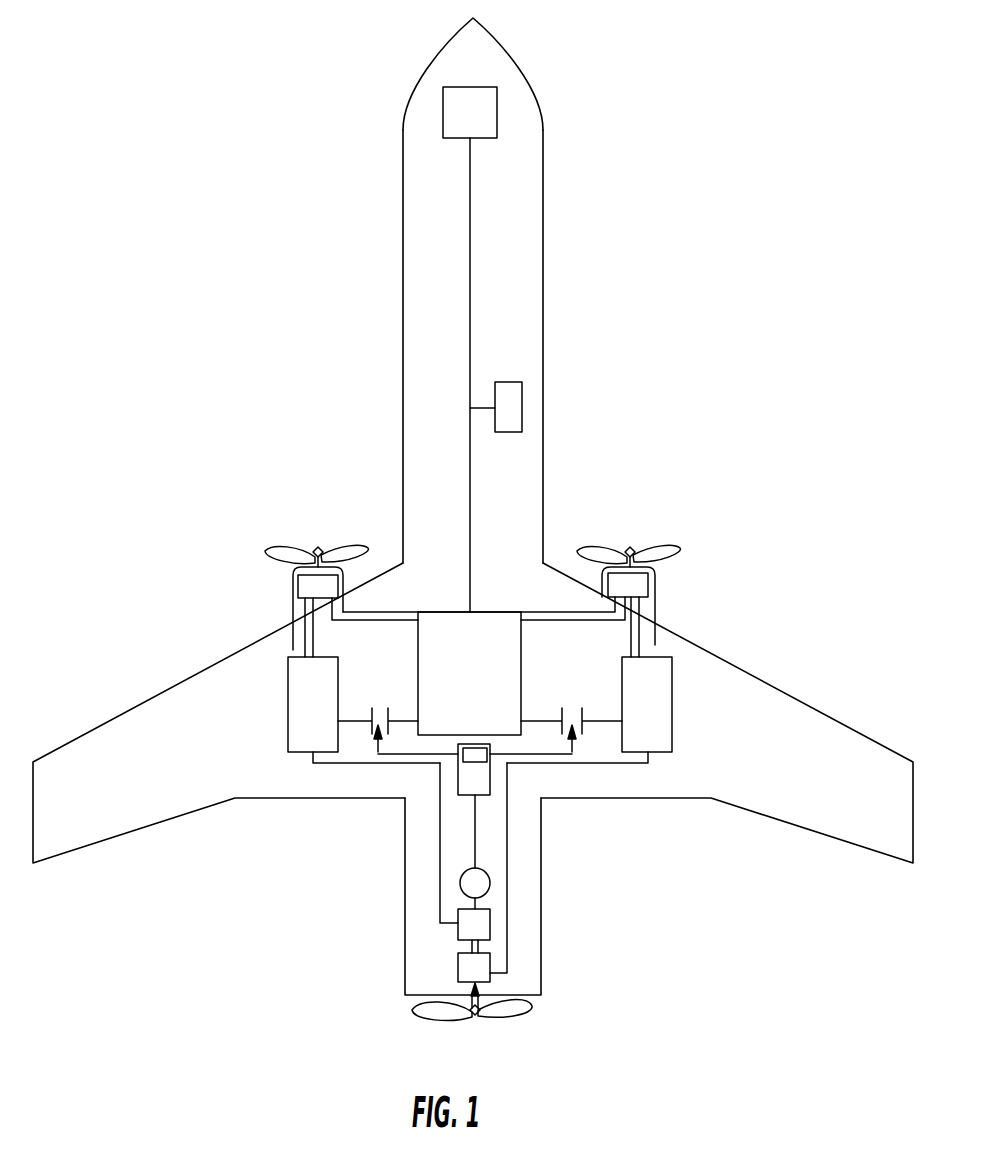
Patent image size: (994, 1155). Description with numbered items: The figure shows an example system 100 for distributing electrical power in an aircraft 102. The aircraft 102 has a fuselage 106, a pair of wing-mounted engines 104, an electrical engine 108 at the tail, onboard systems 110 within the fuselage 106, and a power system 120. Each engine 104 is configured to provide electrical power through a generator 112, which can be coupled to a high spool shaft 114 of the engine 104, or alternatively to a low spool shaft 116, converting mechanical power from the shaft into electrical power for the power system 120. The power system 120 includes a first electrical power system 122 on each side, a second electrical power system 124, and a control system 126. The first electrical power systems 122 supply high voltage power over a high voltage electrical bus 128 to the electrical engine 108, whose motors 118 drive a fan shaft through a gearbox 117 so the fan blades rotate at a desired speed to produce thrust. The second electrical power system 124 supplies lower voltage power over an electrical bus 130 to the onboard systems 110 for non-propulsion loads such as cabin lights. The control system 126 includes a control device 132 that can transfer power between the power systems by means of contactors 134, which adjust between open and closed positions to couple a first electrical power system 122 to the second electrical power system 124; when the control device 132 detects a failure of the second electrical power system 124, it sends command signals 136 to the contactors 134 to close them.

The system 100 is at (473, 501).
The aircraft 102 is at (508, 48).
The engine 104 is at (315, 554).
The fuselage 106 is at (532, 284).
The electrical engine 108 is at (514, 1034).
The onboard system 110 is at (497, 99).
The generator 112 is at (307, 587).
The high spool shaft 114 is at (390, 610).
The low spool shaft 116 is at (304, 648).
The gearbox 117 is at (472, 882).
The motor 118 is at (470, 965).
The power system 120 is at (192, 733).
The first electrical power system 122 is at (318, 740).
The second electrical power system 124 is at (486, 688).
The control system 126 is at (484, 795).
The high voltage electrical bus 128 is at (440, 833).
The electrical bus 130 is at (469, 282).
The control device 132 is at (487, 757).
The contactor 134 is at (381, 688).
The command signal 136 is at (406, 756).